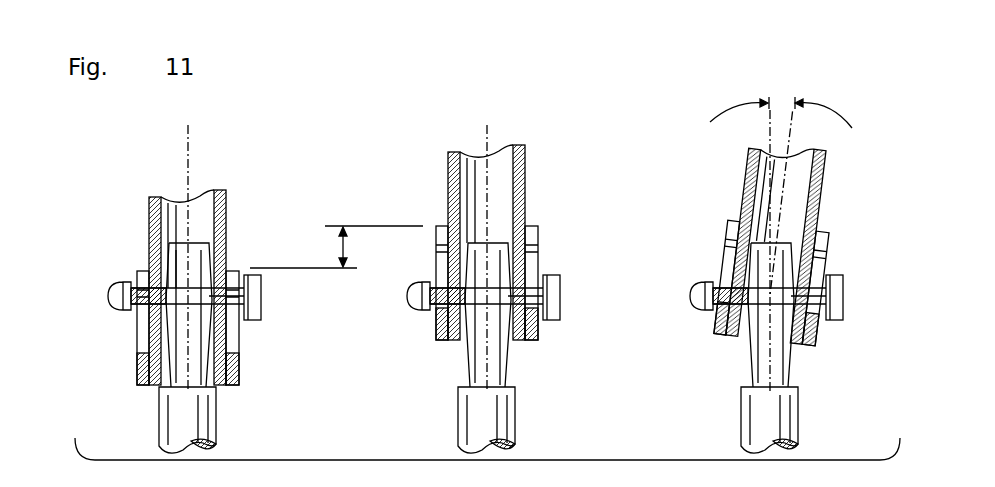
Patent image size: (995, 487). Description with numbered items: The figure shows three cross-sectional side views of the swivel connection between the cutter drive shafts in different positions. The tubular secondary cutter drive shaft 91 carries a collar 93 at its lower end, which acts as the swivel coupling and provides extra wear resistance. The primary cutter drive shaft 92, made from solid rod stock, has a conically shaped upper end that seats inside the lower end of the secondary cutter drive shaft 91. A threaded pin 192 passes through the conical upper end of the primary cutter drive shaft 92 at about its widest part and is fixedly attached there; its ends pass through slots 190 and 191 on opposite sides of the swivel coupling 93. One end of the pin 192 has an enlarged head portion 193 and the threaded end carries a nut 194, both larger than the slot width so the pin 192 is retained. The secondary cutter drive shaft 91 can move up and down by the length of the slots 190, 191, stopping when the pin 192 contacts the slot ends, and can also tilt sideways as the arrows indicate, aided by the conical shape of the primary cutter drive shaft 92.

The secondary cutter drive shaft 91 is at (150, 210).
The primary cutter drive shaft 92 is at (218, 416).
The collar (swivel coupling) 93 is at (137, 276).
The slot 190 is at (237, 332).
The slot 191 is at (142, 335).
The threaded pin 192 is at (137, 329).
The enlarged head portion 193 is at (108, 300).
The nut 194 is at (253, 320).